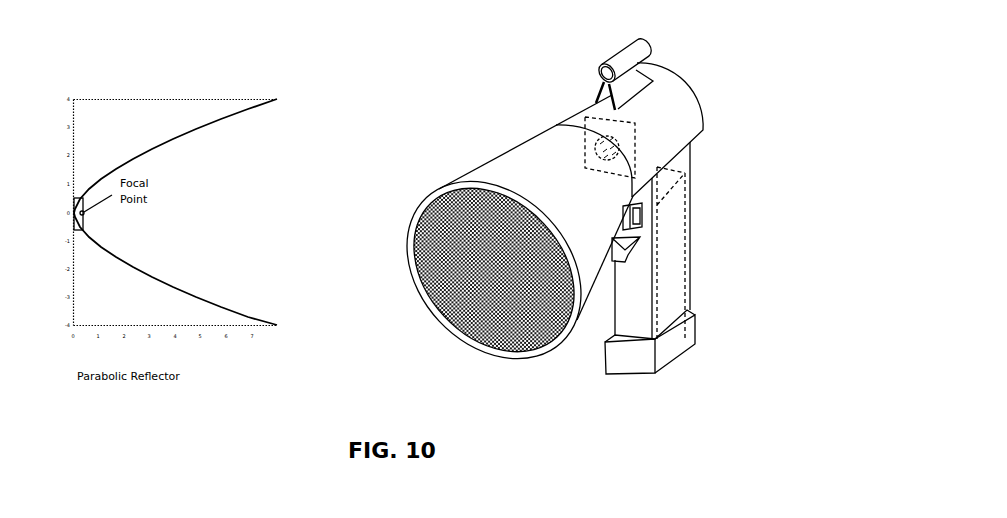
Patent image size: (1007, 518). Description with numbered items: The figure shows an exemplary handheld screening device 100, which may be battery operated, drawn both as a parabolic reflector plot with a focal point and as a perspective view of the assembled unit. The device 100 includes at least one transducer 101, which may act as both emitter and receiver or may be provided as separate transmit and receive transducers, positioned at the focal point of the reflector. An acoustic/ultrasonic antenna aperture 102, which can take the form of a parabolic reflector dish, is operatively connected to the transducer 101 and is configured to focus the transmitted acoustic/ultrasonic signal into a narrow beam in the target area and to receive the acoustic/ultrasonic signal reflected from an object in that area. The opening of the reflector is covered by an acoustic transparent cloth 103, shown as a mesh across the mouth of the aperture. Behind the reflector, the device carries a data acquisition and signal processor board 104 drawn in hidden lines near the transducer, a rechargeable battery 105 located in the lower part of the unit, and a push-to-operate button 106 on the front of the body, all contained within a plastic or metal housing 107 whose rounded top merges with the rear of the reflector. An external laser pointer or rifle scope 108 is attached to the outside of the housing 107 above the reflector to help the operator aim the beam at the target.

The handheld screening device 100 is at (692, 42).
The transducer 101 is at (80, 210).
The acoustic/ultrasonic antenna aperture 102 is at (197, 123).
The acoustic transparent cloth 103 is at (450, 232).
The data acquisition and signal processor board 104 is at (590, 118).
The rechargeable battery 105 is at (677, 268).
The push-to-operate button 106 is at (636, 215).
The housing 107 is at (690, 125).
The laser pointer or rifle scope 108 is at (623, 57).